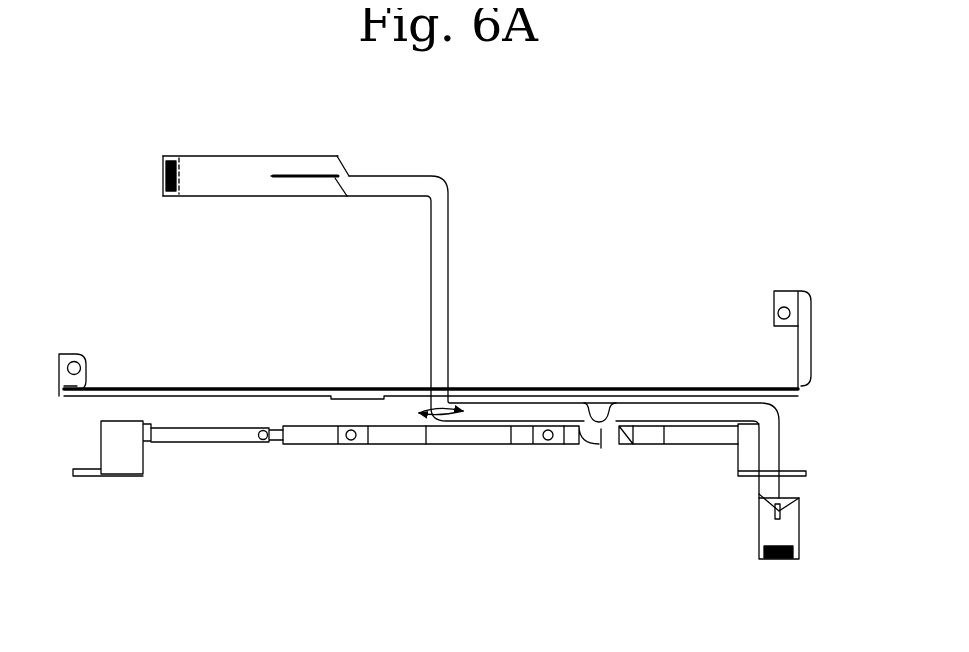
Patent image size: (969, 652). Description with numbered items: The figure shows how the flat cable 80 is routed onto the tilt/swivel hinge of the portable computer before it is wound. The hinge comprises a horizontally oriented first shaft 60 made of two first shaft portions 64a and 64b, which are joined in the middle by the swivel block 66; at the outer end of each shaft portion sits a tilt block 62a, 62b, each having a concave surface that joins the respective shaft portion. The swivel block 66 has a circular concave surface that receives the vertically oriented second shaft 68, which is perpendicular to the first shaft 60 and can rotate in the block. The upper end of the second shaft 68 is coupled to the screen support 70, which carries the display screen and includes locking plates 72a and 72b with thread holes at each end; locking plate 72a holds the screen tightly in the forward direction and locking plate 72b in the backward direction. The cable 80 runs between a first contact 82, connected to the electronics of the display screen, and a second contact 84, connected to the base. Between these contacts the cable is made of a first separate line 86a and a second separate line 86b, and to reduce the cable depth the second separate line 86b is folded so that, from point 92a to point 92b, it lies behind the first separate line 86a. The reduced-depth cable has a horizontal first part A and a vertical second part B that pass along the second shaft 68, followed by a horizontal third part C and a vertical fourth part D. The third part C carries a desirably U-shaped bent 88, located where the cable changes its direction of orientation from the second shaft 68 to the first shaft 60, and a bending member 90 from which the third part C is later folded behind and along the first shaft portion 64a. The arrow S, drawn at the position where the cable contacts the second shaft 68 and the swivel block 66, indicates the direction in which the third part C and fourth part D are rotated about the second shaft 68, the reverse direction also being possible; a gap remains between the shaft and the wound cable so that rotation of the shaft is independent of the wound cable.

The first shaft 60 is at (413, 477).
The tilt block 62a is at (108, 443).
The tilt block 62b is at (745, 457).
The first shaft portion 64a is at (208, 441).
The first shaft portion 64b is at (692, 443).
The swivel block 66 is at (478, 436).
The second shaft 68 is at (430, 428).
The screen support 70 is at (618, 388).
The locking plate 72a is at (70, 353).
The locking plate 72b is at (786, 292).
The cable 80 is at (477, 360).
The first contact 82 is at (162, 176).
The second contact 84 is at (778, 565).
The first separate line 86a is at (312, 192).
The second separate line 86b is at (303, 160).
The bent 88 is at (603, 440).
The bending member 90 is at (632, 442).
The point 92a is at (340, 160).
The point 92b is at (782, 500).
The first part A is at (265, 196).
The second part B is at (447, 298).
The third part C is at (510, 440).
The fourth part D is at (778, 440).
The arrow S is at (455, 405).